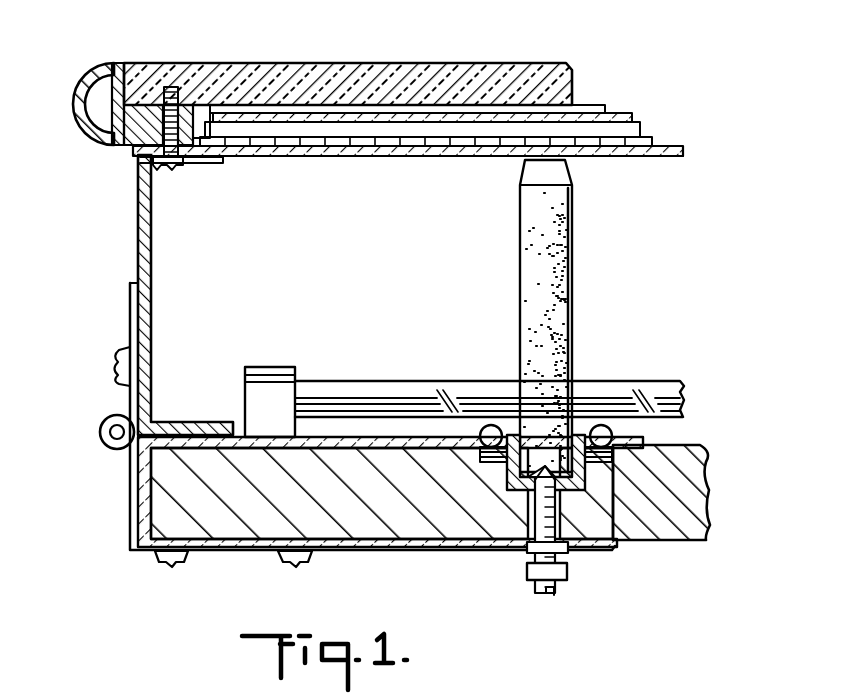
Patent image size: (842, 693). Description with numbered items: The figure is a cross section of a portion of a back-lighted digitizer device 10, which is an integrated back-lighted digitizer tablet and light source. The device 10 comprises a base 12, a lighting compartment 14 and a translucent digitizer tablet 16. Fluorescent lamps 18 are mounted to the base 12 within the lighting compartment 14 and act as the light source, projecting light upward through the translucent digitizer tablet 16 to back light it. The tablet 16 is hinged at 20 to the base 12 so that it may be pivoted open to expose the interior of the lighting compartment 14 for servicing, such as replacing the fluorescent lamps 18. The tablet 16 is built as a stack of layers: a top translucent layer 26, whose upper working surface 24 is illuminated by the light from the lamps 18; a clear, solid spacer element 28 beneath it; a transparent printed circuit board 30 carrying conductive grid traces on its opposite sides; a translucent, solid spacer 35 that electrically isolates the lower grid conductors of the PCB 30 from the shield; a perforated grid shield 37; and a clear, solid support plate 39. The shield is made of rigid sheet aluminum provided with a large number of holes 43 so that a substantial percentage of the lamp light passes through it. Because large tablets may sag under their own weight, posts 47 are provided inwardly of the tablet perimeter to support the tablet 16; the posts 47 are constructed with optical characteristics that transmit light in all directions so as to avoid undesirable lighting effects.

The digitizer device 10 is at (80, 240).
The base 12 is at (445, 553).
The lighting compartment 14 is at (136, 255).
The translucent digitizer tablet 16 is at (195, 50).
The fluorescent lamps 18 is at (384, 395).
The hinge 20 is at (130, 407).
The working surface 24 is at (400, 63).
The top translucent layer 26 is at (572, 100).
The spacer element 28 is at (604, 106).
The transparent printed circuit board 30 is at (640, 126).
The translucent solid spacer 35 is at (642, 138).
The perforated grid shield 37 is at (654, 150).
The support plate 39 is at (683, 157).
The holes 43 is at (633, 158).
The posts 47 is at (575, 270).